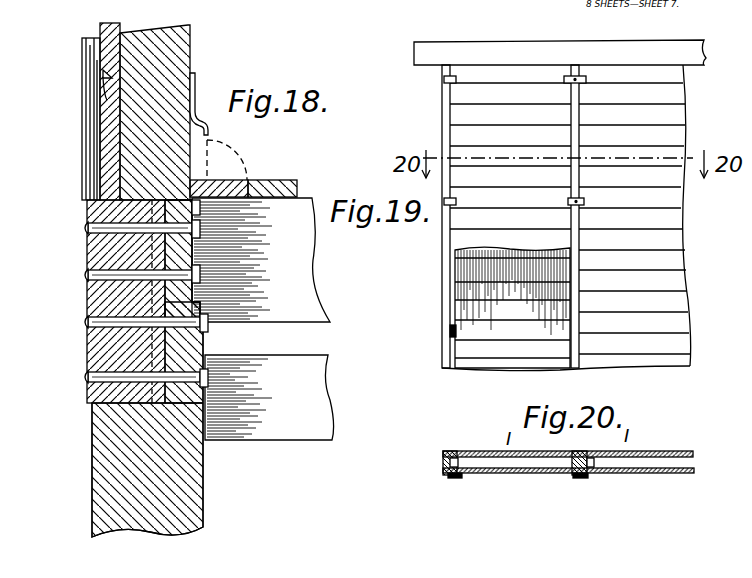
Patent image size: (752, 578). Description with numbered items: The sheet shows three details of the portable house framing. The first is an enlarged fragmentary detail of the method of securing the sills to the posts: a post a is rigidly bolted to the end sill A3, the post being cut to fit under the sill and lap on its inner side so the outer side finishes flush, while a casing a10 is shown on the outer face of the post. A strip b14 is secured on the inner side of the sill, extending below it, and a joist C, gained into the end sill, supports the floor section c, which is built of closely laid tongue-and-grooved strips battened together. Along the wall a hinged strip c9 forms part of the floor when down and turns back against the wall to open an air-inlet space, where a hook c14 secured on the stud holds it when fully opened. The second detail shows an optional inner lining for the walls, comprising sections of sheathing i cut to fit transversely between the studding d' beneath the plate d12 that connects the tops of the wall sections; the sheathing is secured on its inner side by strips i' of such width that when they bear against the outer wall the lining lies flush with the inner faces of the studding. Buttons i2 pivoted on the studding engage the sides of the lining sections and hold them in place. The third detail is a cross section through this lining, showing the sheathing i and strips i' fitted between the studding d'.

In FIG. 18, the post a is at (110, 477).
In FIG. 18, the facing strip a10 is at (82, 160).
In FIG. 18, the end sill A3 is at (115, 253).
In FIG. 18, the hook c14 is at (197, 82).
In FIG. 18, the strip c9 is at (243, 181).
In FIG. 18, the floor section c is at (290, 181).
In FIG. 18, the joist C is at (320, 293).
In FIG. 18, the strip b14 is at (320, 405).
In FIG. 19, the plate d12 is at (661, 33).
In FIG. 19, the upright d' is at (520, 228).
In FIG. 20, the upright d' is at (516, 482).
In FIG. 19, the sheathing i is at (562, 218).
In FIG. 20, the sheathing i is at (569, 477).
In FIG. 19, the button i2 is at (616, 197).
In FIG. 19, the strip i' is at (488, 324).
In FIG. 20, the strip i' is at (549, 479).